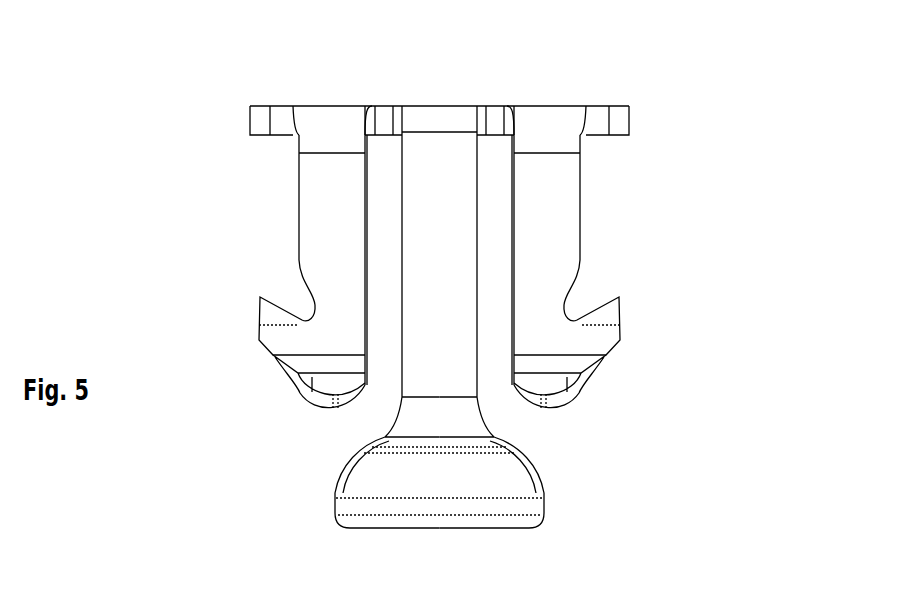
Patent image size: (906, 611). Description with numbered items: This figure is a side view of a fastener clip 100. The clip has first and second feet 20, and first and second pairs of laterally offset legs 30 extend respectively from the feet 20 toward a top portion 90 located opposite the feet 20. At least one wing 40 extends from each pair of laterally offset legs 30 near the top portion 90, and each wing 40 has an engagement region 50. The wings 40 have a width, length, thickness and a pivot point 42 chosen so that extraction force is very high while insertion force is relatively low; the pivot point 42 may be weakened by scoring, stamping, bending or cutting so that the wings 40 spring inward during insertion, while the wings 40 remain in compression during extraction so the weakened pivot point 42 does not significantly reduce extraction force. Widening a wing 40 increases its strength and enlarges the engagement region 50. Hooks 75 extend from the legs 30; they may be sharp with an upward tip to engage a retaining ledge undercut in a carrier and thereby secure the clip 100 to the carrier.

The fastener clip 100 is at (662, 105).
The top portion 90 is at (382, 108).
The pivot point 42 is at (445, 118).
The laterally offset legs 30 is at (323, 236).
The hooks 75 is at (265, 305).
The feet 20 is at (553, 405).
The wing 40 is at (445, 355).
The engagement region 50 is at (453, 460).